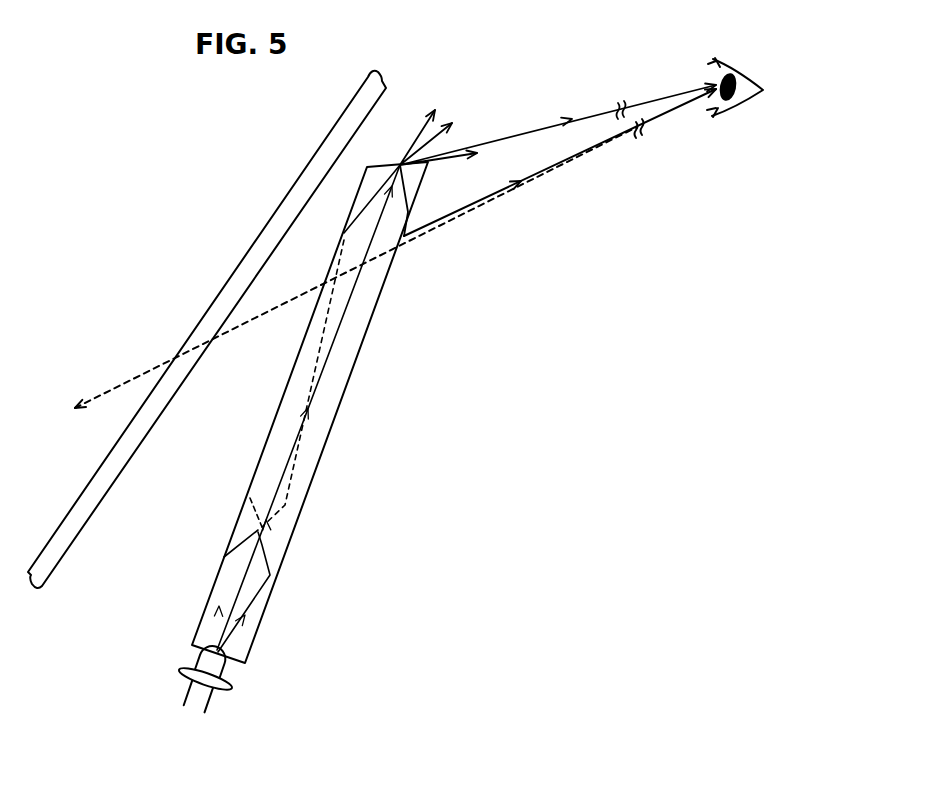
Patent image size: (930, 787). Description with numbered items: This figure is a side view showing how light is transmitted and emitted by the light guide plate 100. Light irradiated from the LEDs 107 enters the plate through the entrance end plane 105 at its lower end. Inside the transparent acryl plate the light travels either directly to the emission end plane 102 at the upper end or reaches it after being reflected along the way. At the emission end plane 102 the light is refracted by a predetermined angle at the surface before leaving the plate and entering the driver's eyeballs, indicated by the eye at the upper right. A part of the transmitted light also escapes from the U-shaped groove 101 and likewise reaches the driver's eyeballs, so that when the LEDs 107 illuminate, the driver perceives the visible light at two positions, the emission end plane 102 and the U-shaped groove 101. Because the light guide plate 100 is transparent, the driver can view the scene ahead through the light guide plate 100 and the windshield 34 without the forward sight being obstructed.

The windshield 34 is at (312, 160).
The light guide plate 100 is at (297, 530).
The U-shaped groove 101 is at (407, 226).
The emission end plane 102 is at (382, 165).
The entrance end plane 105 is at (195, 656).
The LED 107 is at (236, 678).